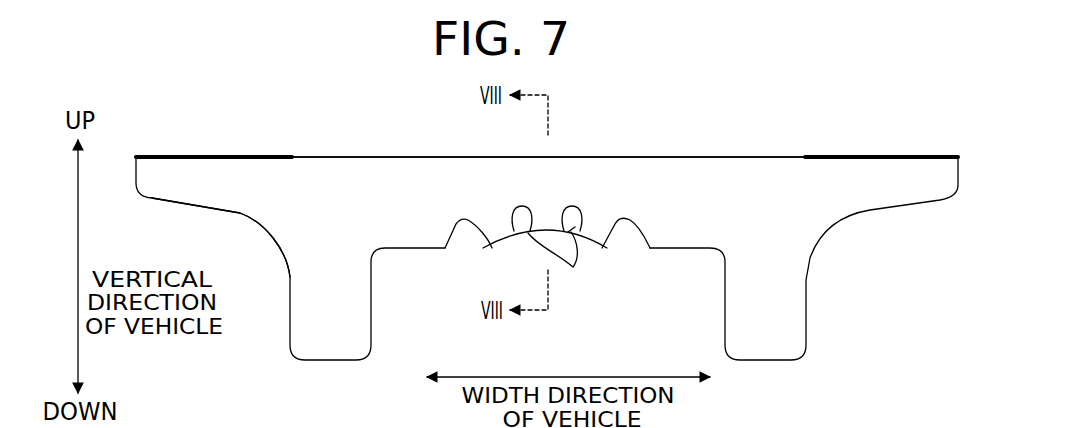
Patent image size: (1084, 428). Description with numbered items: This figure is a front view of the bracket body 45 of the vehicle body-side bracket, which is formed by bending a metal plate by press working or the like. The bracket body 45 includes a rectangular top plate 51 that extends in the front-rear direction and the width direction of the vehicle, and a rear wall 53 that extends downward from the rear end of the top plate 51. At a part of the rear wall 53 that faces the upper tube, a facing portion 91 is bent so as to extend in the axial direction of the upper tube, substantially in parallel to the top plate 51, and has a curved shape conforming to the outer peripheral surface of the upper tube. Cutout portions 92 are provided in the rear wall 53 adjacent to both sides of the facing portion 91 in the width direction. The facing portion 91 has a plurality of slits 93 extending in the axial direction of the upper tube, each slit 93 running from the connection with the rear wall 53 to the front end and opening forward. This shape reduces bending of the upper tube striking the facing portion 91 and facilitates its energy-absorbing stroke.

The bracket body 45 is at (237, 128).
The top plate 51 is at (366, 156).
The rear wall 53 is at (278, 222).
The facing portion 91 is at (503, 228).
The cutout portion 92 is at (456, 224).
The slit 93 is at (557, 263).